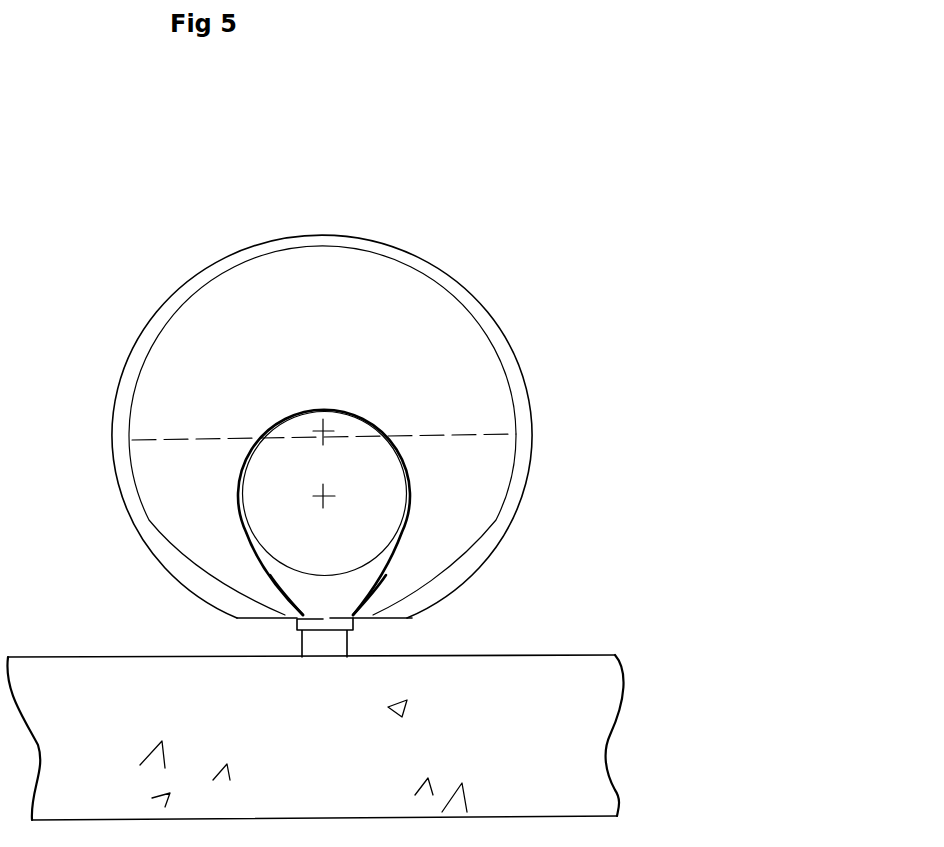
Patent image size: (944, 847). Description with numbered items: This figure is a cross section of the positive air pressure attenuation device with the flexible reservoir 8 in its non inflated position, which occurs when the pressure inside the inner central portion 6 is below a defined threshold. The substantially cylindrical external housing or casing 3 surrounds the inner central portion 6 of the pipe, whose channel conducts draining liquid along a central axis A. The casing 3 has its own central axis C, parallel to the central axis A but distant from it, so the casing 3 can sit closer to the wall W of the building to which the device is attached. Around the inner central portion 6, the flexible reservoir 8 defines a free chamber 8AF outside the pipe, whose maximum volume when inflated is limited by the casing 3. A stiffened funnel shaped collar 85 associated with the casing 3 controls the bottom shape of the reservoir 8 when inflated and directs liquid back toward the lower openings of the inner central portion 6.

The external housing or casing 3 is at (268, 238).
The stiffened funnel shaped collar 85 is at (483, 538).
The flexible reservoir 8 is at (240, 489).
The inner central portion 6 is at (303, 576).
The free chamber 8AF is at (347, 592).
The central axis of the external casing C is at (323, 429).
The central axis of the inner central portion A is at (323, 496).
The wall W is at (565, 741).